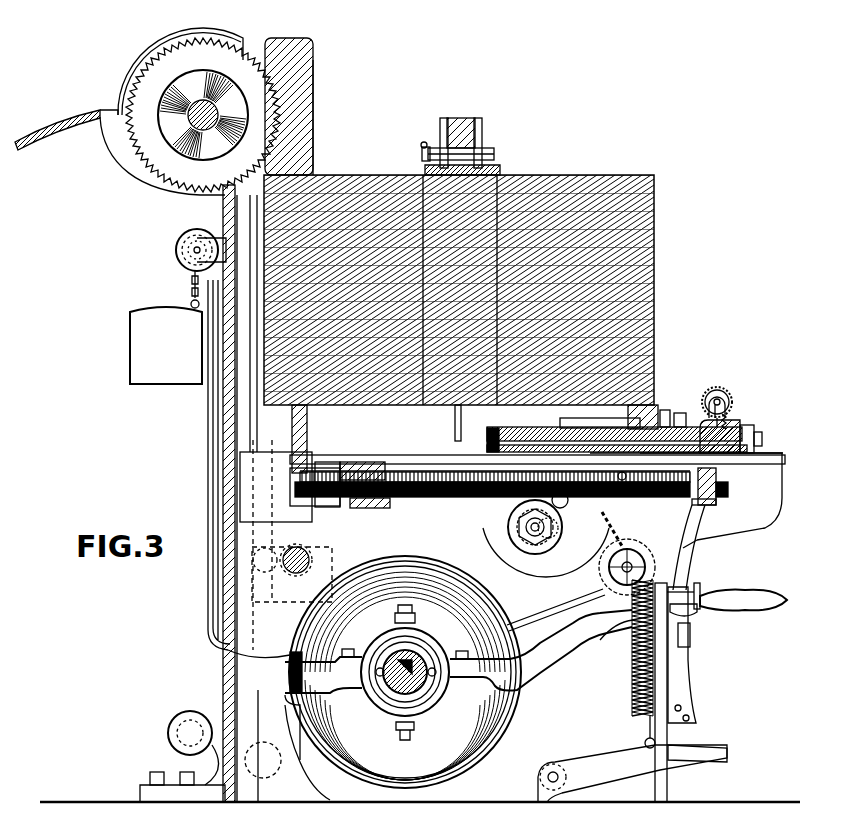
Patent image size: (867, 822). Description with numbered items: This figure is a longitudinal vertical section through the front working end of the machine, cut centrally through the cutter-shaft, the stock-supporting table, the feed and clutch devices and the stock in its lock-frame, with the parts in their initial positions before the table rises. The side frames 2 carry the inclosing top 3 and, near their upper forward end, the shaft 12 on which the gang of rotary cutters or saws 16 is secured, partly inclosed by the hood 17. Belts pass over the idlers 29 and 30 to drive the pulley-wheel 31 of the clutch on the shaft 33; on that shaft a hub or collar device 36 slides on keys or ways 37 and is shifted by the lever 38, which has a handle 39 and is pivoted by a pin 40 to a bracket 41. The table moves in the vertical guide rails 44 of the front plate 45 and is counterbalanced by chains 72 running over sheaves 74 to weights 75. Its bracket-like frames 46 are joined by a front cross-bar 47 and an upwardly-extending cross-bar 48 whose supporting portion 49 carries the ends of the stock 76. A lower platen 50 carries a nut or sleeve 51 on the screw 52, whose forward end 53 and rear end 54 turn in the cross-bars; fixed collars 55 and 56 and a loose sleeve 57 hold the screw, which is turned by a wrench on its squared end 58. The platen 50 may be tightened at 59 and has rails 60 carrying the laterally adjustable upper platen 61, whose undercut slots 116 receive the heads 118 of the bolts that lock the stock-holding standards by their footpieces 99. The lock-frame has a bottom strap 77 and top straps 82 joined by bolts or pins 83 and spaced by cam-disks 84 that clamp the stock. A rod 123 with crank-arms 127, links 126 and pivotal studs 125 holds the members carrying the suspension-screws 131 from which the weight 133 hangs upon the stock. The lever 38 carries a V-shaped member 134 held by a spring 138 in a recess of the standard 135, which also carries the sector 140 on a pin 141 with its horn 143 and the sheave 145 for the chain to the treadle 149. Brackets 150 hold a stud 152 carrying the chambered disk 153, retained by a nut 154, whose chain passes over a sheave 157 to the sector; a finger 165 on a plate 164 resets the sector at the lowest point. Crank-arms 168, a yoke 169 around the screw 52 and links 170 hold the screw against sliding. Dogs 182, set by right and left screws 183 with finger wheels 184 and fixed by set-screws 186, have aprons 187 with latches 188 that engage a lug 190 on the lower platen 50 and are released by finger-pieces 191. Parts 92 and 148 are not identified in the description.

The side frames 2 is at (420, 459).
The inclosing top 3 is at (84, 115).
The shaft 12 is at (188, 115).
The rotary cutters or saws 16 is at (150, 134).
The hood 17 is at (158, 60).
The idler 29 is at (278, 787).
The idler 30 is at (195, 712).
The pulley-wheel 31 is at (436, 732).
The shaft 33 is at (399, 650).
The hub or collar device 36 is at (394, 655).
The keys or ways 37 is at (378, 675).
The lever 38 is at (285, 677).
The handle 39 is at (770, 591).
The pin 40 is at (290, 659).
The bracket 41 is at (285, 706).
The vertical guide portions or rails 44 is at (243, 393).
The front plate 45 is at (222, 468).
The bracket-like frames 46 is at (776, 506).
The cross-bar 47 is at (718, 485).
The upwardly-extending cross-bar 48 is at (296, 462).
The supporting portion 49 is at (312, 411).
The lower platen 50 is at (490, 452).
The screw-threaded nut or sleeve 51 is at (564, 506).
The screw 52 is at (398, 478).
The forward end 53 is at (700, 510).
The rear end 54 is at (292, 487).
The fixed collar 55 is at (330, 506).
The fixed collar 56 is at (370, 507).
The sleeve 57 is at (352, 462).
The squared end 58 is at (716, 501).
The tightening device 59 is at (682, 413).
The laterally-extending rails or guides 60 is at (520, 427).
The upper platen 61 is at (487, 439).
The chain 72 is at (232, 494).
The sheaves or grooved wheels 74 is at (178, 239).
The counterbalances or weights 75 is at (166, 327).
The stock 76 is at (358, 175).
The bottom strap 77 is at (455, 424).
The top straps 82 is at (442, 120).
The bolts or pins 83 is at (490, 152).
The cam-disks 84 is at (467, 118).
The nut 92 is at (428, 148).
The footpiece 99 is at (664, 410).
The undercut grooves or slots 116 is at (655, 397).
The heads 118 is at (600, 417).
The rod or shaft 123 is at (300, 552).
The pivotal pin or stud 125 is at (285, 743).
The link 126 is at (272, 612).
The crank-arms 127 is at (282, 565).
The adjustable suspension-screws 131 is at (289, 38).
The cross-bar or weight 133 is at (314, 122).
The V-shaped member 134 is at (700, 613).
The standard 135 is at (670, 739).
The spring 138 is at (632, 695).
The sector 140 is at (690, 636).
The pin or bolt 141 is at (692, 640).
The projection or horn 143 is at (700, 585).
The sheave or grooved roller 145 is at (633, 619).
The pin 148 is at (645, 738).
The second foot-treadle 149 is at (605, 766).
The brackets or arms 150 is at (556, 528).
The stud or pin 152 is at (531, 538).
The second chambered disk 153 is at (494, 545).
The nut 154 is at (546, 534).
The sheave 157 is at (610, 592).
The plate 164 is at (712, 538).
The finger 165 is at (688, 583).
The crank-arms 168 is at (628, 477).
The U-shaped connection or yoke 169 is at (626, 519).
The links 170 is at (418, 474).
The dogs 182 is at (735, 430).
The right and left screws 183 is at (730, 392).
The finger piece or wheel 184 is at (722, 388).
The set-screws 186 is at (735, 412).
The aprons 187 is at (760, 416).
The spring-actuated holding-latches 188 is at (756, 430).
The lug or projection 190 is at (785, 452).
The finger-piece 191 is at (764, 438).